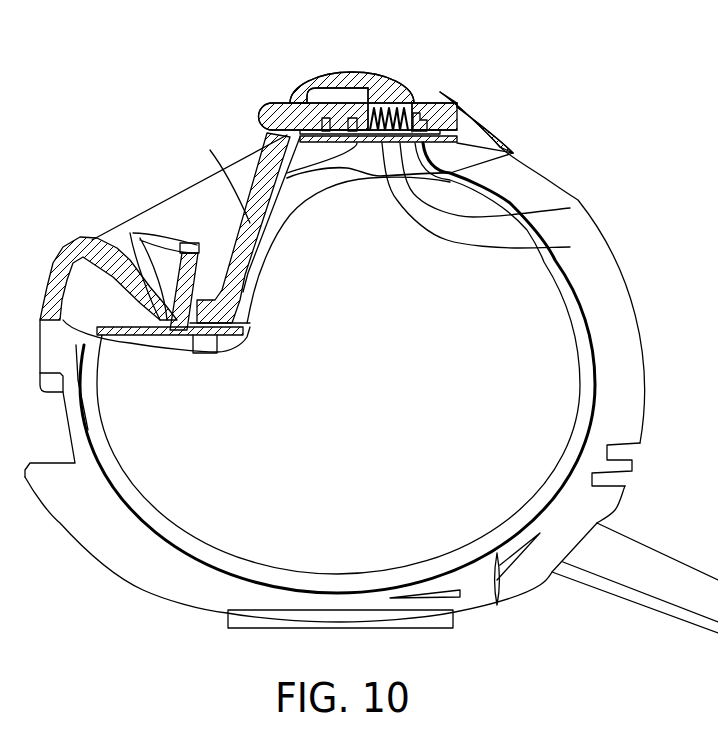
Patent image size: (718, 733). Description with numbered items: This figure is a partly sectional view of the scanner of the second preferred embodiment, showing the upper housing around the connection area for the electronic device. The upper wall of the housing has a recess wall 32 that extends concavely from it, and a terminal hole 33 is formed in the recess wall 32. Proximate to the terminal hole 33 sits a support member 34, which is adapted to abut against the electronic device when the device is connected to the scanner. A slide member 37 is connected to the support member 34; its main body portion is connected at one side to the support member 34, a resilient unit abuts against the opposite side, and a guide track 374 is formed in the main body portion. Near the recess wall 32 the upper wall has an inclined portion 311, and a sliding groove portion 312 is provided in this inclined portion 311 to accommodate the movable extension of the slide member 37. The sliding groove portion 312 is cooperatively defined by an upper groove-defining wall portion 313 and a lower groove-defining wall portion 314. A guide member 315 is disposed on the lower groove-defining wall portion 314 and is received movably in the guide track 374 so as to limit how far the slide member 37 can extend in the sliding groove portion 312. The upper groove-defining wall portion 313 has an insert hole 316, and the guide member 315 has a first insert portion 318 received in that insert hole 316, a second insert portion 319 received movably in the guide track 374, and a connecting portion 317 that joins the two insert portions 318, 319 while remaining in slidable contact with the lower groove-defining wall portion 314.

The sliding groove portion 312 is at (336, 132).
The support member 34 is at (265, 108).
The slide member 37 is at (311, 117).
The guide track 374 is at (357, 113).
The upper groove-defining wall portion 313 is at (412, 127).
The insert hole 316 is at (447, 98).
The first insert portion 318 is at (433, 136).
The lower groove-defining wall portion 314 is at (513, 153).
The guide member 315 is at (570, 208).
The connecting portion 317 is at (570, 247).
The second insert portion 319 is at (266, 146).
The inclined portion 311 is at (247, 200).
The recess wall 32 is at (131, 232).
The terminal hole 33 is at (197, 263).